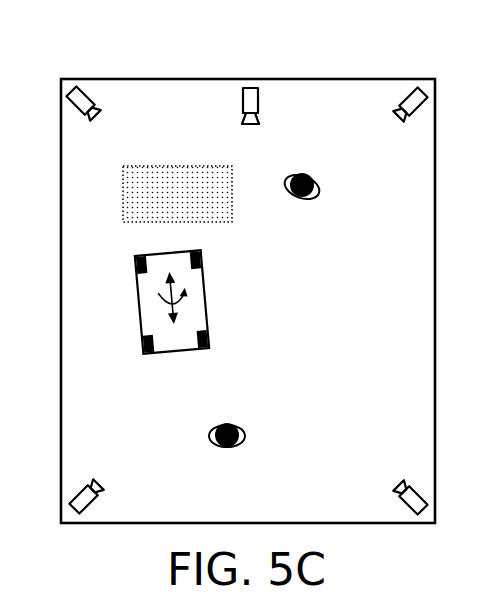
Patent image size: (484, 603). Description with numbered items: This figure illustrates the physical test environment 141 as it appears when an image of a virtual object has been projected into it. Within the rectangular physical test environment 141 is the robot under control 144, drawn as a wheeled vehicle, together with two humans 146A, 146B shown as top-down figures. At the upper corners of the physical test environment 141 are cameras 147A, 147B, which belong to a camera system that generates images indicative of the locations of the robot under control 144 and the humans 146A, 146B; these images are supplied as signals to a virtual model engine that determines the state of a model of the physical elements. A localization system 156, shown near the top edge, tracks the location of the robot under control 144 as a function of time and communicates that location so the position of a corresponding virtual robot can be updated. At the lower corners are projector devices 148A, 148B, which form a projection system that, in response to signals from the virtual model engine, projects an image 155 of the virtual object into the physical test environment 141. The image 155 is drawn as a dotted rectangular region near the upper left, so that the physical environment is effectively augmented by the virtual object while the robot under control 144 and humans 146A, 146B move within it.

The physical test environment 141 is at (76, 67).
The robot under control 144 is at (210, 311).
The human 146A is at (318, 193).
The human 146B is at (245, 433).
The camera 147A is at (94, 98).
The camera 147B is at (399, 99).
The projector device 148A is at (96, 499).
The projector device 148B is at (400, 500).
The image of virtual object 155 is at (207, 165).
The localization system 156 is at (258, 99).